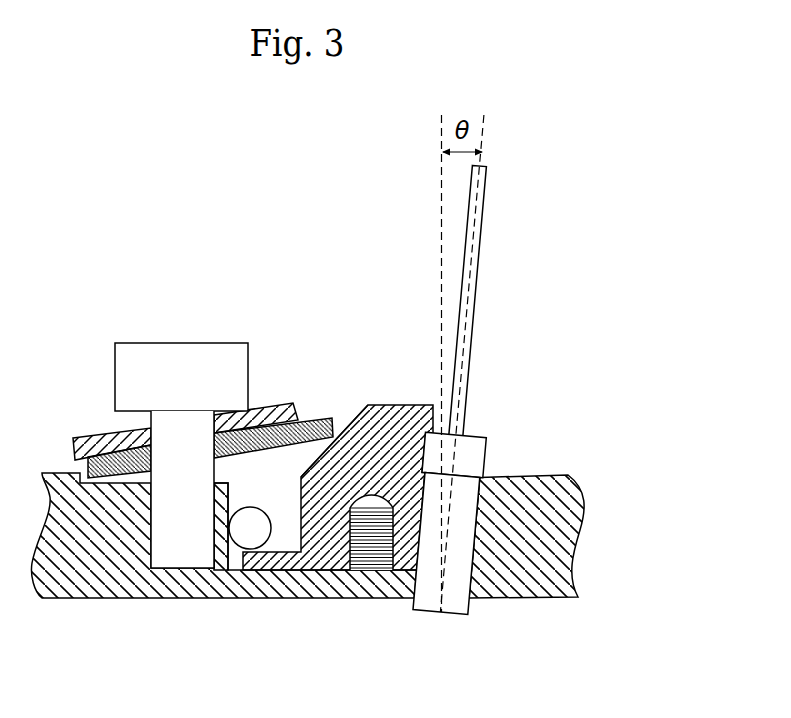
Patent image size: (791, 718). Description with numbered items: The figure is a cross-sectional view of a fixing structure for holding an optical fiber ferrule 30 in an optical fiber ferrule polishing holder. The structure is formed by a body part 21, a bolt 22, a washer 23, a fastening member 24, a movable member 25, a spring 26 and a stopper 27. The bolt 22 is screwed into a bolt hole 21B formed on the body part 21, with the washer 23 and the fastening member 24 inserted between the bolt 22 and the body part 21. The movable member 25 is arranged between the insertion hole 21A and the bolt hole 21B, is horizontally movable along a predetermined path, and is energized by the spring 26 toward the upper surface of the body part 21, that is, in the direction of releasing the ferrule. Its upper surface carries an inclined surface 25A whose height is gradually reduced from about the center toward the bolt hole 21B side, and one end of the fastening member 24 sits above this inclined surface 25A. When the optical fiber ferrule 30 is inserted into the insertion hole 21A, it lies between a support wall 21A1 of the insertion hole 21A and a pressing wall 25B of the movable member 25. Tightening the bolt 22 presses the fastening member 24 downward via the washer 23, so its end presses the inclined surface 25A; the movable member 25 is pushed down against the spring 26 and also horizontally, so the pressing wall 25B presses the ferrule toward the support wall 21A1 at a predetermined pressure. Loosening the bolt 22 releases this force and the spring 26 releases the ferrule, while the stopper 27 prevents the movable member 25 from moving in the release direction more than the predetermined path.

The body part 21 is at (360, 575).
The insertion hole 21A is at (473, 600).
The support wall 21A1 is at (475, 548).
The bolt hole 21B is at (218, 479).
The bolt 22 is at (185, 369).
The washer 23 is at (260, 412).
The fastening member 24 is at (312, 420).
The movable member 25 is at (461, 450).
The inclined surface 25A is at (341, 432).
The pressing wall 25B is at (421, 538).
The spring 26 is at (363, 563).
The stopper 27 is at (249, 529).
The optical fiber ferrule 30 is at (475, 450).